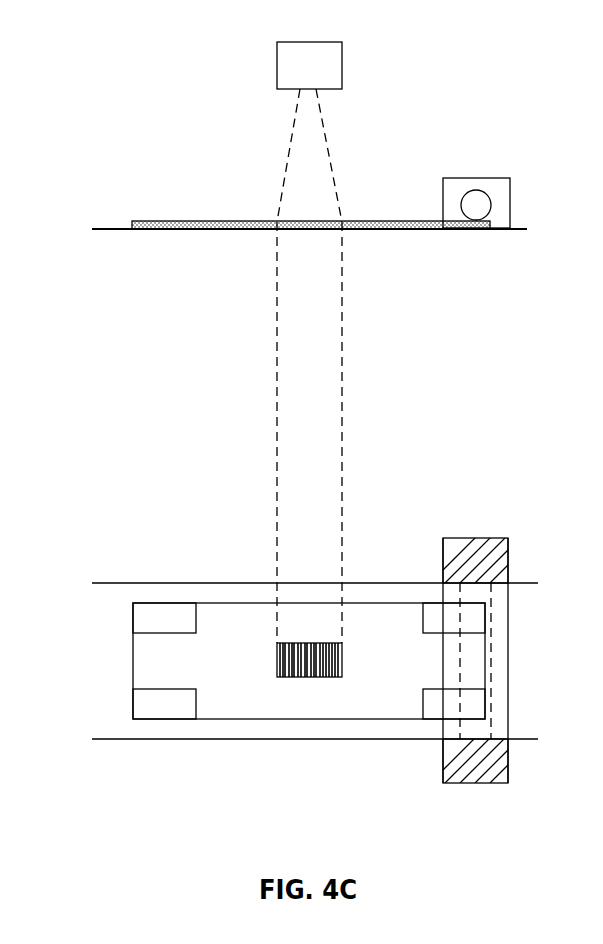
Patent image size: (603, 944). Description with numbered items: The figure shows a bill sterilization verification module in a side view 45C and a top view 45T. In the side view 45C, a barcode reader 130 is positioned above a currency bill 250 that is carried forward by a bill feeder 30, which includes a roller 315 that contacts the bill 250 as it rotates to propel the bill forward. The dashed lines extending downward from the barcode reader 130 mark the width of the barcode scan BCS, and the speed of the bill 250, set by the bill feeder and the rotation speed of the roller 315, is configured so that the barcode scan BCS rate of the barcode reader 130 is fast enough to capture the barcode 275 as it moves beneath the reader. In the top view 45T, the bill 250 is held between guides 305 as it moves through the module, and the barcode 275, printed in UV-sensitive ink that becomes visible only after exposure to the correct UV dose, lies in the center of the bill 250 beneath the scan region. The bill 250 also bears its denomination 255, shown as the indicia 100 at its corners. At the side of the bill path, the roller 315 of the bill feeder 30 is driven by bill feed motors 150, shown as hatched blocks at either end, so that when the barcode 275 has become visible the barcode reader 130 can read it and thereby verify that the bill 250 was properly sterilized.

The side view 45C is at (163, 62).
The barcode reader 130 is at (332, 53).
The barcode scan BCS is at (248, 312).
The currency bill 250 is at (181, 220).
The bill feeder 30 is at (472, 178).
The roller 315 is at (478, 207).
The top view 45T is at (137, 540).
The guides 305 is at (130, 582).
The denomination 100 is at (309, 661).
The denomination 255 is at (133, 617).
The barcode 275 is at (337, 663).
The bill feed motors 150 is at (510, 560).